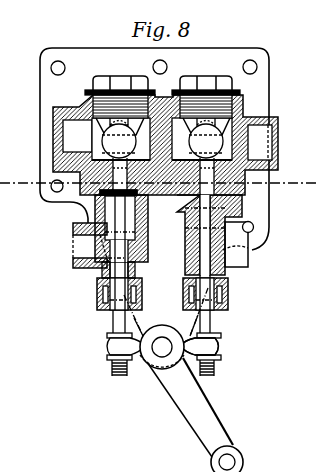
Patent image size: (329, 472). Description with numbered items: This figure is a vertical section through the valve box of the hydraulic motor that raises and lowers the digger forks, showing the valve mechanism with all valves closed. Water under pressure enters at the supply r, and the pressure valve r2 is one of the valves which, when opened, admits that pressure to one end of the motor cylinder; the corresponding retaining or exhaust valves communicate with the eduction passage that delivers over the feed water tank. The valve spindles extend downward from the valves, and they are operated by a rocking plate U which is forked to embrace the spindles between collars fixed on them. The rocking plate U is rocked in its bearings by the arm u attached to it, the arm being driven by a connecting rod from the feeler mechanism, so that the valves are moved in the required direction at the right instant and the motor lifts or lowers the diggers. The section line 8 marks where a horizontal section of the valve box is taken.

The water under pressure supply r is at (258, 143).
The pressure valve r2 is at (206, 138).
The rocking plate U is at (215, 347).
The arm u is at (191, 398).
The section line 8 is at (164, 187).